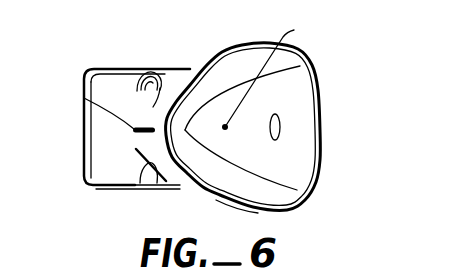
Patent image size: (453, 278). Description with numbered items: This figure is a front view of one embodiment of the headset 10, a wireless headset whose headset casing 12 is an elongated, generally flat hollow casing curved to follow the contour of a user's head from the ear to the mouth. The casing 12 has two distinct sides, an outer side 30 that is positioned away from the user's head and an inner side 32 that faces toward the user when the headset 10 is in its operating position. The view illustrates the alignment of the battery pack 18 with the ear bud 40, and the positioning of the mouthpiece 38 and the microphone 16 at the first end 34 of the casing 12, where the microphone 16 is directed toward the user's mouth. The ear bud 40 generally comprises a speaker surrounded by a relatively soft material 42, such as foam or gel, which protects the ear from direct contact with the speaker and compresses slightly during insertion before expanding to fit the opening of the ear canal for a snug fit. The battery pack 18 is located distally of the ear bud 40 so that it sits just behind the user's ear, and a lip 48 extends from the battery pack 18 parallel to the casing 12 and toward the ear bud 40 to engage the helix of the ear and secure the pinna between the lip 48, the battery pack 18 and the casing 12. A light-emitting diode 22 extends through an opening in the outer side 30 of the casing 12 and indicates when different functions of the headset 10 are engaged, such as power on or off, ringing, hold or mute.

The headset 10 is at (204, 46).
The headset casing 12 is at (320, 56).
The microphone 16 is at (84, 99).
The battery pack 18 is at (108, 60).
The light-emitting diode 22 is at (280, 127).
The outer side 30 is at (287, 168).
The inner side 32 is at (137, 122).
The first end 34 is at (118, 185).
The mouthpiece 38 is at (167, 150).
The ear bud 40 is at (90, 135).
The soft material 42 is at (100, 167).
The lip 48 is at (150, 184).